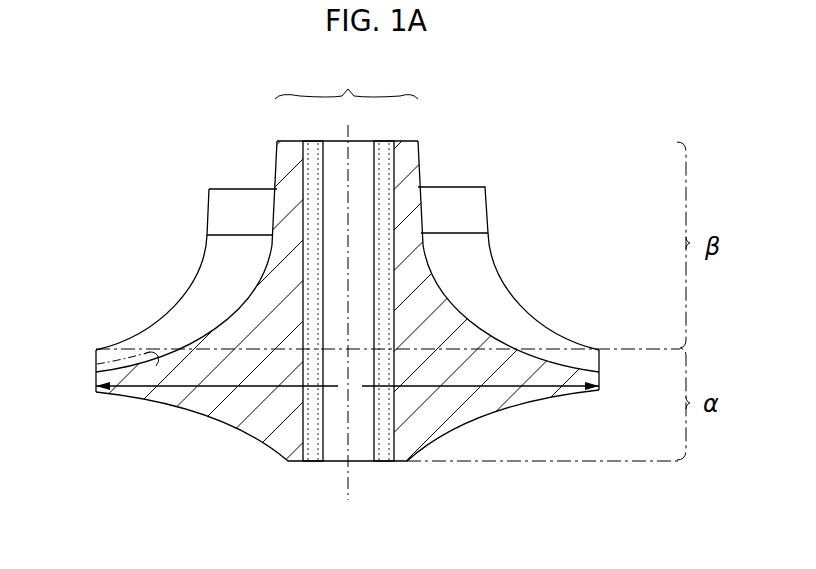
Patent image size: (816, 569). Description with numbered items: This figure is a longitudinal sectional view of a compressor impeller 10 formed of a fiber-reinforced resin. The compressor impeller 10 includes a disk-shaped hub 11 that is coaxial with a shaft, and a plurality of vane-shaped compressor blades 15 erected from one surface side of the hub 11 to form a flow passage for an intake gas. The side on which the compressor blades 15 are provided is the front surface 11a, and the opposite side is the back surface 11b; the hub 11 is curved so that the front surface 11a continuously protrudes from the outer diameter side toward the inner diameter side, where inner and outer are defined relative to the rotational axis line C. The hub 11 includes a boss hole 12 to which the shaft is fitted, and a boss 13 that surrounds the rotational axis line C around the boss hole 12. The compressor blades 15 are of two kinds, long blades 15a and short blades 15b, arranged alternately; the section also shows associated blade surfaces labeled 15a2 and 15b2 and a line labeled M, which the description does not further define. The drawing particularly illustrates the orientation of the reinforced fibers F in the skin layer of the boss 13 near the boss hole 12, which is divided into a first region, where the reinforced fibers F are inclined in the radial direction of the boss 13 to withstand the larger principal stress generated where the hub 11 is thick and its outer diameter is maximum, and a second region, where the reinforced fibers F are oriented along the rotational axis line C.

The compressor impeller 10 is at (328, 304).
The hub 11 is at (169, 326).
The front surface 11a is at (96, 363).
The back surface 11b is at (124, 399).
The boss hole 12 is at (350, 230).
The boss 13 is at (346, 81).
The compressor blades 15 is at (510, 285).
The long blades 15a is at (486, 212).
The step inner surface 15a2 is at (479, 228).
The short blades 15b is at (520, 300).
The hub curved surface 15b2 is at (501, 300).
The meridional line M is at (347, 387).
The reinforced fibers F is at (313, 450).
The rotational axis line C is at (350, 480).